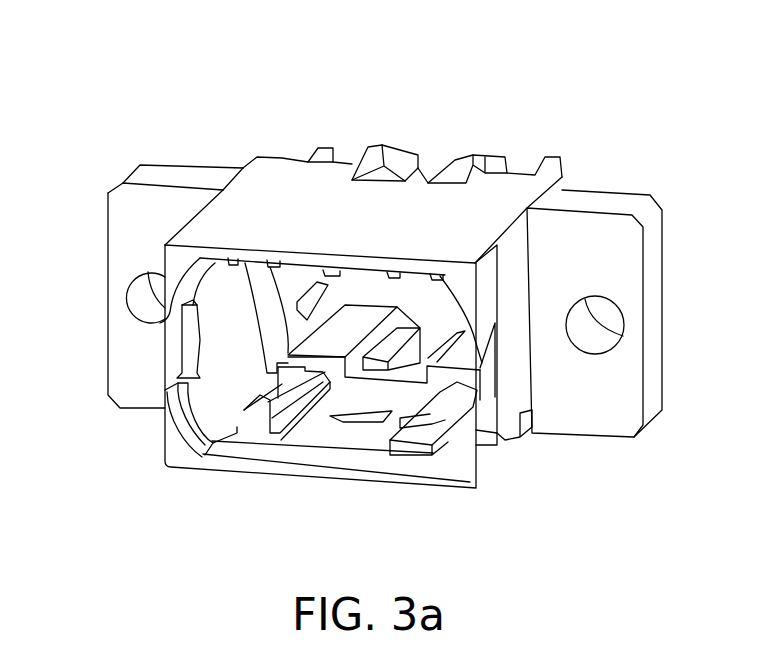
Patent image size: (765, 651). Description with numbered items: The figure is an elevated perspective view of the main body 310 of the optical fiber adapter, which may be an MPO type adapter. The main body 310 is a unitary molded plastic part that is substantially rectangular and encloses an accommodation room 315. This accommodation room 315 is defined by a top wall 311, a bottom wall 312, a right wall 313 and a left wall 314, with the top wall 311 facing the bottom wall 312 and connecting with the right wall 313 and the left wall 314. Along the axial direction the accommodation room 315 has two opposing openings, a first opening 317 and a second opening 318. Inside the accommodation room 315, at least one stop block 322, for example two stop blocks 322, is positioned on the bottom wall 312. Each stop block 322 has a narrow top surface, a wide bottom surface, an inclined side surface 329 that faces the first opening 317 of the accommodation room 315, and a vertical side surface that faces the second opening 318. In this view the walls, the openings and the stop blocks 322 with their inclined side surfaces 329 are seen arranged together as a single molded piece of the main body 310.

The main body 310 is at (478, 95).
The top wall 311 is at (282, 190).
The bottom wall 312 is at (333, 472).
The right wall 313 is at (490, 447).
The left wall 314 is at (176, 441).
The accommodation room 315 is at (327, 413).
The first opening 317 is at (395, 398).
The second opening 318 is at (433, 297).
The stop block 322 is at (265, 400).
The inclined side surface 329 is at (276, 412).